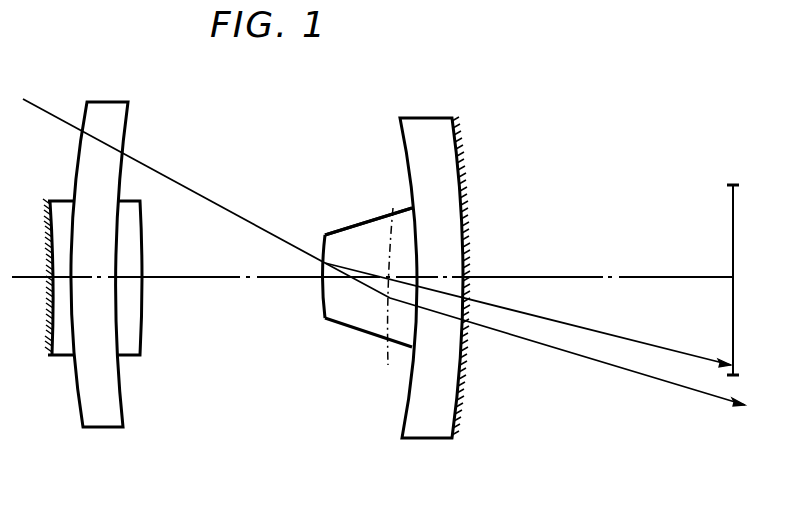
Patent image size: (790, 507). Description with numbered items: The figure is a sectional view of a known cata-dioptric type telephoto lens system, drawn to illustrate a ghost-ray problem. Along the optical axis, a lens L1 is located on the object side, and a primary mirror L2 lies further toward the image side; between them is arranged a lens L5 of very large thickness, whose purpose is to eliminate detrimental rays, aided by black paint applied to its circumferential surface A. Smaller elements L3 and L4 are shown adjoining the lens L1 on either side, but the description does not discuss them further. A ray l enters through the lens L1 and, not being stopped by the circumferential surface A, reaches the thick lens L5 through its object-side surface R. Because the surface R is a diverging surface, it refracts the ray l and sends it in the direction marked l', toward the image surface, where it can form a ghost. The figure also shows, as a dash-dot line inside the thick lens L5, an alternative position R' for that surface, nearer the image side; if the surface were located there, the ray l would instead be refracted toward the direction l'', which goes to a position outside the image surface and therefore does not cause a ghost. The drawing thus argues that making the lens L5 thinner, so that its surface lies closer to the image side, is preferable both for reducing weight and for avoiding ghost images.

The lens L1 is at (105, 108).
The primary mirror L2 is at (431, 120).
The third lens L3 is at (130, 349).
The fourth lens L4 is at (63, 349).
The thick lens L5 is at (356, 322).
The surface on the object side R is at (310, 260).
The surface position nearer the image side R' is at (388, 301).
The circumferential surface A is at (372, 220).
The ray l is at (174, 181).
The refracted ray direction l' is at (528, 315).
The refracted ray direction l'' is at (535, 334).